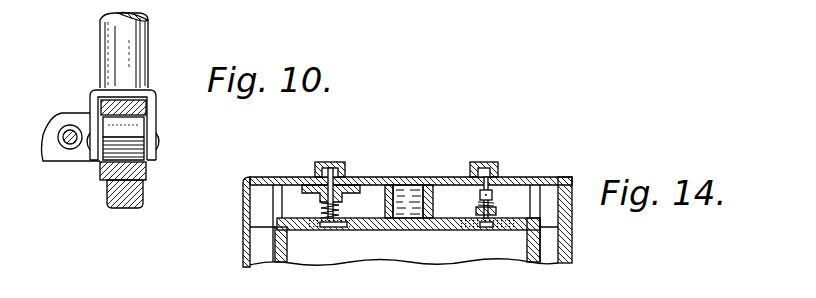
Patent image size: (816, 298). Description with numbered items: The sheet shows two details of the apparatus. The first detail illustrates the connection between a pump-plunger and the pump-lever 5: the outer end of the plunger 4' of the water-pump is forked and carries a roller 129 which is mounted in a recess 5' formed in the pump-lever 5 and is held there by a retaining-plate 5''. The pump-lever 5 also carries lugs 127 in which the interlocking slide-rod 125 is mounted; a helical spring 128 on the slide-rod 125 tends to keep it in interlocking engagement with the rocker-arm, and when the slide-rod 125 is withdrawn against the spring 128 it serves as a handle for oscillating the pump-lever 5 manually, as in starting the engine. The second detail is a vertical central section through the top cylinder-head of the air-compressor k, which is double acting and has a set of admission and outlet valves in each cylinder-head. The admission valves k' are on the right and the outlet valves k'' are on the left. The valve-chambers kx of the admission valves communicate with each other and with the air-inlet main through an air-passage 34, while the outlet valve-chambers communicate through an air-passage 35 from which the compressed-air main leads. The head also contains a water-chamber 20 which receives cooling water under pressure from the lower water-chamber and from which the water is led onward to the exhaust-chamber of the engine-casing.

In FIG. 10, the plunger 4' is at (142, 50).
In FIG. 10, the pump-lever 5 is at (138, 197).
In FIG. 10, the recess 5' is at (150, 136).
In FIG. 10, the retaining-plate 5'' is at (148, 105).
In FIG. 10, the lugs 127 is at (63, 118).
In FIG. 10, the helical spring 128 is at (58, 143).
In FIG. 10, the interlocking slide-rod 125 is at (66, 148).
In FIG. 10, the roller 129 is at (122, 143).
In FIG. 14, the air-compressor k is at (407, 237).
In FIG. 14, the admission valves k' is at (408, 258).
In FIG. 14, the outlet valves k'' is at (328, 232).
In FIG. 14, the inlet valve-chambers kx is at (494, 217).
In FIG. 14, the water-chamber 20 is at (412, 192).
In FIG. 14, the air-passage 34 is at (557, 255).
In FIG. 14, the air-passage 35 is at (267, 253).